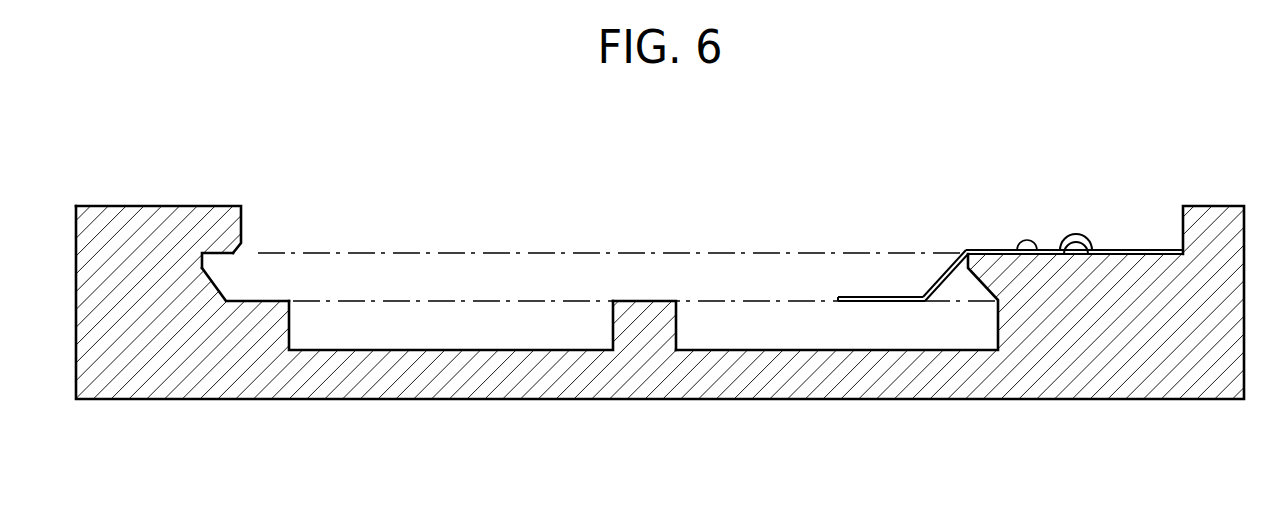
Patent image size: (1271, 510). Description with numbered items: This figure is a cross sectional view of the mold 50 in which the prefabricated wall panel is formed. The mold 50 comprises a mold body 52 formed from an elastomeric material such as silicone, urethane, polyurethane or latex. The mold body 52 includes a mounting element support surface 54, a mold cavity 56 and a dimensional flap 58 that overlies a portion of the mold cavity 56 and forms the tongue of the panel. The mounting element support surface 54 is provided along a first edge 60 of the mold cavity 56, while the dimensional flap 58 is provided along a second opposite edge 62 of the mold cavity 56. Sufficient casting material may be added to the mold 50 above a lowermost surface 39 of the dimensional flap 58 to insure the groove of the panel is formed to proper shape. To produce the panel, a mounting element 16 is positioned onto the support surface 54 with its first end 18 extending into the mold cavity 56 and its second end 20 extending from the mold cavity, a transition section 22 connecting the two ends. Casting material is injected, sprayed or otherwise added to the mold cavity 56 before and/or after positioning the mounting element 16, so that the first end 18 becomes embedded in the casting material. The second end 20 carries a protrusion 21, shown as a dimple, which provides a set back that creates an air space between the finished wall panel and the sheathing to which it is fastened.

The mold 50 is at (513, 164).
The mold body 52 is at (1138, 366).
The dimensional flap 58 is at (221, 217).
The lowermost surface 39 is at (222, 254).
The second opposite edge 62 is at (217, 288).
The mold cavity 56 is at (469, 324).
The first edge 60 is at (978, 282).
The mounting element 16 is at (1027, 224).
The first end 18 is at (876, 296).
The transition section 22 is at (940, 277).
The second end 20 is at (1139, 250).
The mounting element support surface 54 is at (1031, 255).
The protrusion 21 is at (1085, 236).